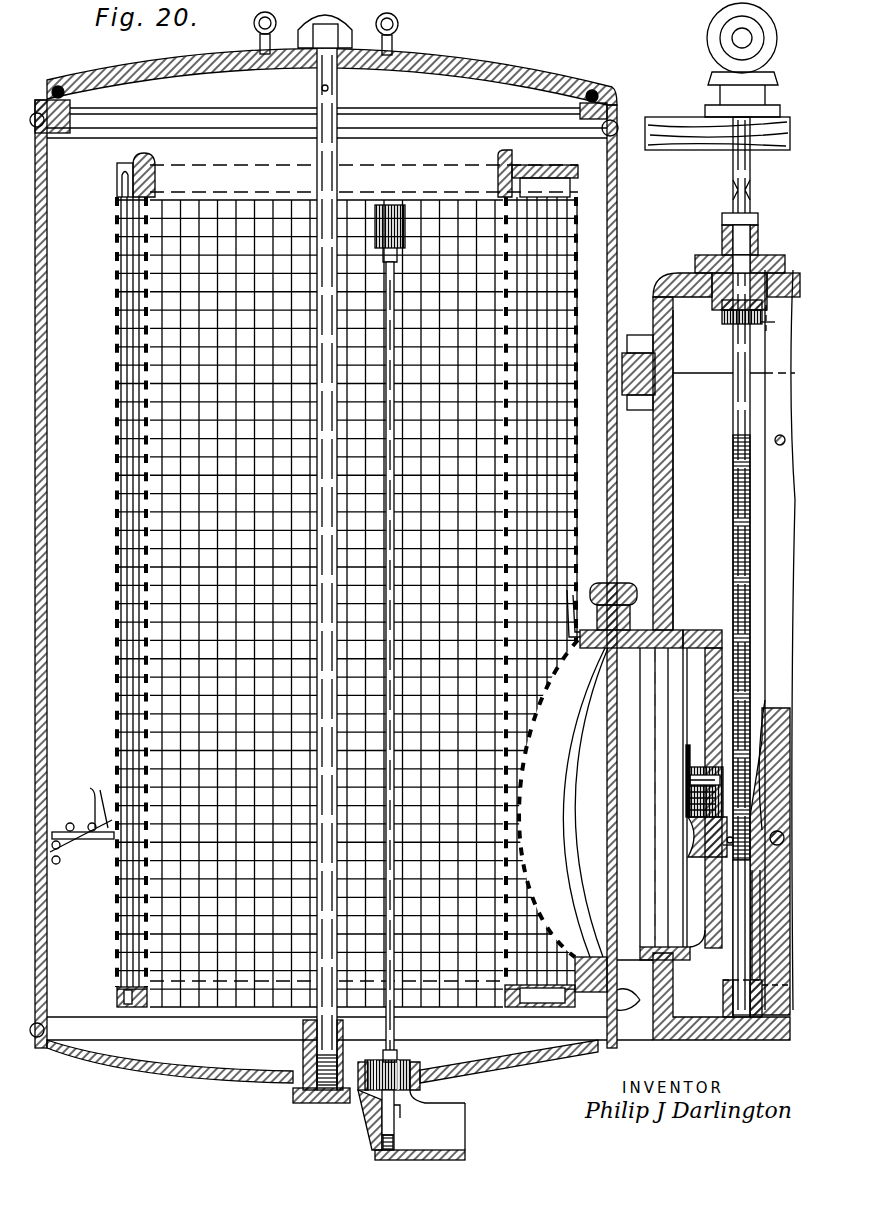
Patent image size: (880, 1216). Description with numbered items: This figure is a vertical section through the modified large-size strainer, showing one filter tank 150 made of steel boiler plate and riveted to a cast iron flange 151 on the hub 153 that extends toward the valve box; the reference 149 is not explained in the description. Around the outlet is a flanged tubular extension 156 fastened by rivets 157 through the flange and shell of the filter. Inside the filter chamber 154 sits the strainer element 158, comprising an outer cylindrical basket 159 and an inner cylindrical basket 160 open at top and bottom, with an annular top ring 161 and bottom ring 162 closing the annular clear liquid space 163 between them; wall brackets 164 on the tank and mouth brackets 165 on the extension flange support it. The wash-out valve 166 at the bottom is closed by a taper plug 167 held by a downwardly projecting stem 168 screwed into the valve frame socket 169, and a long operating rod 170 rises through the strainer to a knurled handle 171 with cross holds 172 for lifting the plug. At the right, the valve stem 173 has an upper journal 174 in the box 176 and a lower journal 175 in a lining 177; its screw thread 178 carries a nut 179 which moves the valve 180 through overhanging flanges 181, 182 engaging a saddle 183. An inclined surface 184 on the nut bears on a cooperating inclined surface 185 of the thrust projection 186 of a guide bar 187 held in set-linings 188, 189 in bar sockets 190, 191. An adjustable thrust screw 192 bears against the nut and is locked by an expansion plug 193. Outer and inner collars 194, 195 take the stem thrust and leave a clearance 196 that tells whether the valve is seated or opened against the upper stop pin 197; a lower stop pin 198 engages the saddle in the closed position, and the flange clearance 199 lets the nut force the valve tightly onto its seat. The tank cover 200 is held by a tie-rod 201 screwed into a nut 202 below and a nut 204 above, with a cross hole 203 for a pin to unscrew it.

The support bracket 149 is at (662, 432).
The filter tank 150 is at (611, 200).
The cast iron flange 151 is at (618, 1018).
The hub 153 is at (643, 600).
The filter chamber 154 is at (608, 178).
The flanged tubular extension 156 is at (590, 960).
The rivet 157 is at (622, 960).
The strainer element 158 is at (364, 586).
The outer cylindrical basket 159 is at (117, 280).
The inner cylindrical basket 160 is at (125, 298).
The annular top ring 161 is at (117, 178).
The annular bottom ring 162 is at (117, 998).
The annular clear liquid space 163 is at (117, 357).
The wall bracket 164 is at (82, 838).
The mouth bracket 165 is at (599, 648).
The wash-out valve 166 is at (415, 1075).
The taper plug 167 is at (405, 1060).
The stem 168 is at (400, 1128).
The valve frame socket 169 is at (395, 1150).
The operating rod 170 is at (386, 1038).
The knurled handle 171 is at (393, 205).
The cross holds 172 is at (386, 205).
The valve stem 173 is at (733, 419).
The journal 174 is at (722, 296).
The journal 175 is at (756, 937).
The box 176 is at (767, 260).
The lining 177 is at (723, 990).
The screw thread 178 is at (733, 460).
The nut 179 is at (720, 778).
The valve 180 is at (694, 640).
The overhanging flange 181 is at (715, 768).
The overhanging flange 182 is at (705, 835).
The saddle 183 is at (770, 853).
The inclined surface 184 is at (775, 749).
The inclined surface 185 is at (774, 876).
The thrust projection 186 is at (769, 925).
The guide bar 187 is at (768, 518).
The set-lining 188 is at (780, 311).
The set-lining 189 is at (776, 994).
The bar socket 190 is at (777, 335).
The bar socket 191 is at (723, 1005).
The adjustable thrust screw 192 is at (682, 815).
The expansion plug 193 is at (685, 808).
The outer collar 194 is at (732, 217).
The inner collar 195 is at (724, 325).
The clearance 196 is at (720, 250).
The upper stop pin 197 is at (780, 429).
The lower stop pin 198 is at (745, 848).
The flange clearance 199 is at (733, 840).
The tank cover 200 is at (467, 62).
The tie-rod 201 is at (338, 128).
The nut 202 is at (303, 1050).
The cross hole 203 is at (330, 92).
The nut 204 is at (338, 16).